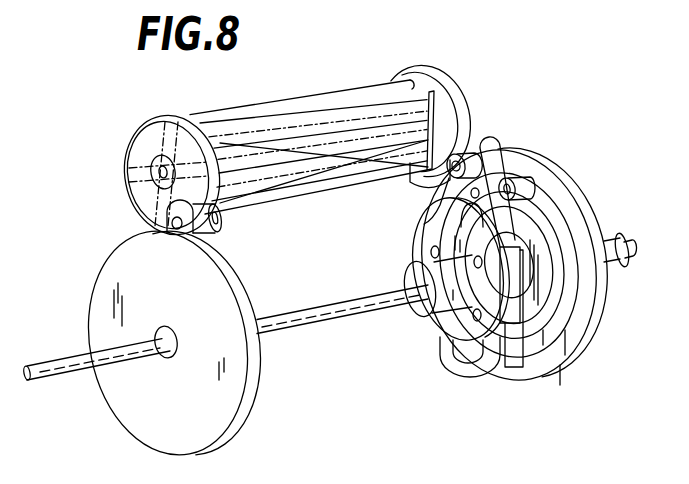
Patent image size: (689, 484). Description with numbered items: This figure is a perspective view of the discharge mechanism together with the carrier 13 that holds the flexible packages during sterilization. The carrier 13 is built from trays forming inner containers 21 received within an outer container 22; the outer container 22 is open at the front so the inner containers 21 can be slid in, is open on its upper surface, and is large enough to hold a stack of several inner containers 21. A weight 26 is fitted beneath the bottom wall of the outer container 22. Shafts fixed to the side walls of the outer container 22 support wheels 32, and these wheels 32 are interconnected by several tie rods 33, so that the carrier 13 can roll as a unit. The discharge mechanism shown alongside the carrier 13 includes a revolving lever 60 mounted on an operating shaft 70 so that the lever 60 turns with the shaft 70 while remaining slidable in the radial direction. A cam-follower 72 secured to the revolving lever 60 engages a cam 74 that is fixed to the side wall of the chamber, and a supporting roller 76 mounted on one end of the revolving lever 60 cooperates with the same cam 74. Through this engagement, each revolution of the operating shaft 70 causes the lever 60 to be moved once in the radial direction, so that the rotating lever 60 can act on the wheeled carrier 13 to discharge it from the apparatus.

The carrier 13 is at (293, 98).
The inner container 21 is at (432, 112).
The outer container 22 is at (348, 102).
The weight 26 is at (333, 193).
The wheels 32 is at (182, 122).
The tie rods 33 is at (252, 113).
The revolving lever 60 is at (437, 208).
The operating shaft 70 is at (375, 305).
The cam-follower 72 is at (522, 175).
The cam 74 is at (258, 392).
The supporting roller 76 is at (213, 222).